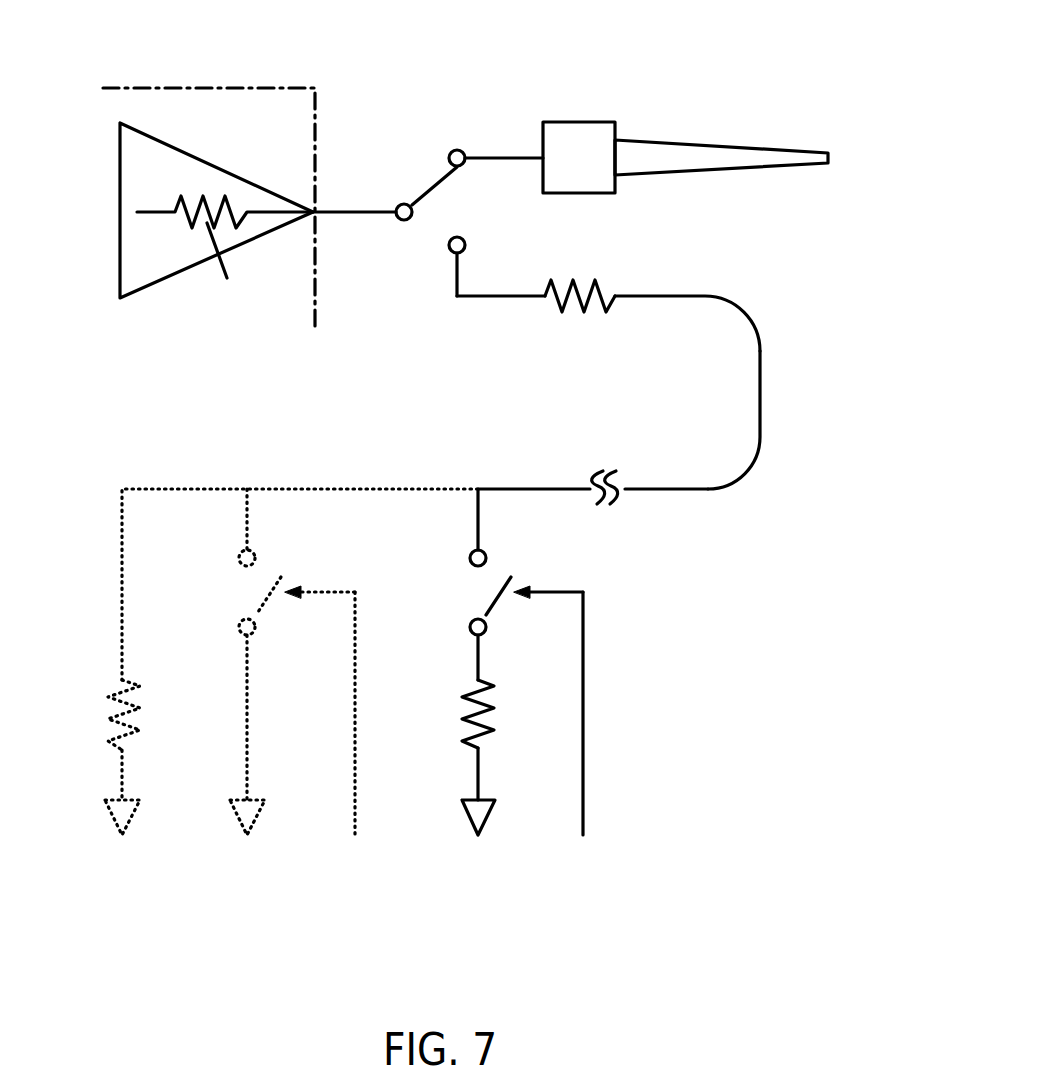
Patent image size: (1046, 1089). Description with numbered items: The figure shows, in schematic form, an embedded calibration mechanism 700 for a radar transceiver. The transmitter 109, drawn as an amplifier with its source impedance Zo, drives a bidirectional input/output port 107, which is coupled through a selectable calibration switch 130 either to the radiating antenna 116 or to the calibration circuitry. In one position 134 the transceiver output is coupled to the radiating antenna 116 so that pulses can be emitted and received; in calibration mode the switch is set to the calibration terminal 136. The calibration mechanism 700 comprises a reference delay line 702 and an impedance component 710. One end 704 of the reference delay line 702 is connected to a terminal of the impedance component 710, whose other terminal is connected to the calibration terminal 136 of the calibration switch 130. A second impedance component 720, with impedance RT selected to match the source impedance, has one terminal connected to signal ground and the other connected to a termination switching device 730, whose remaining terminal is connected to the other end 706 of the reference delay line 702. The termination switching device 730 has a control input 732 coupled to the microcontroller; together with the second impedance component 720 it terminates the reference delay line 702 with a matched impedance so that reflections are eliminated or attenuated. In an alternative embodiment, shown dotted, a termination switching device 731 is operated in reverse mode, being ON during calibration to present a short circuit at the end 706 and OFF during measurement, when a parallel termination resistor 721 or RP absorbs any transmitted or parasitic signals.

The transmitter 109 is at (232, 173).
The bidirectional input/output port 107 is at (353, 208).
The calibration switch 130 is at (444, 198).
The antenna position 134 is at (470, 135).
The calibration terminal 136 is at (449, 249).
The radiating antenna 116 is at (575, 121).
The impedance component 710 is at (562, 310).
The end of reference line 704 is at (673, 294).
The reference delay line 702 is at (763, 427).
The other end of reference line 706 is at (527, 487).
The calibration mechanism 700 is at (747, 554).
The termination switching device 730 is at (492, 601).
The second impedance component 720 is at (470, 690).
The control input 732 is at (585, 672).
The termination switching device 731 is at (265, 605).
The parallel termination resistor 721 is at (128, 701).